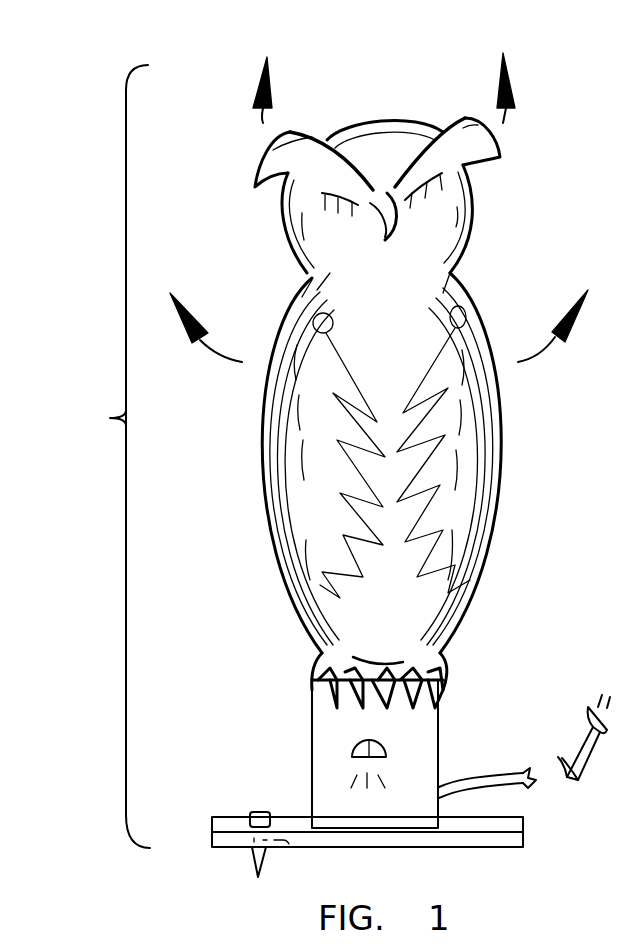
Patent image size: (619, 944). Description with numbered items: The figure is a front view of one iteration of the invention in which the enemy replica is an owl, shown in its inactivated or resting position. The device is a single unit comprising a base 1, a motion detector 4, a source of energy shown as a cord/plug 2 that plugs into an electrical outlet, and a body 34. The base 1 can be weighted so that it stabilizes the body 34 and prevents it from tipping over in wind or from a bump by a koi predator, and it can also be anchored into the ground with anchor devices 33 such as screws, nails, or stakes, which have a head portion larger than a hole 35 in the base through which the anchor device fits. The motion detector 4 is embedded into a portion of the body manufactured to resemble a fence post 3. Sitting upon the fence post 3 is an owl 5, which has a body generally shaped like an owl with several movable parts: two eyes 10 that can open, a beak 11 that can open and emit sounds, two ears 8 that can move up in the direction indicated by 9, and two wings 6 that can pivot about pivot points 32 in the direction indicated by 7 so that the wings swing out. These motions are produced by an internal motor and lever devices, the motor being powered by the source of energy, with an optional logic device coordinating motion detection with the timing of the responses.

The base 1 is at (460, 837).
The cord/plug 2 is at (477, 777).
The fence post 3 is at (318, 735).
The motion detector 4 is at (372, 738).
The owl 5 is at (432, 612).
The wings 6 is at (478, 483).
The direction of wing movement 7 is at (227, 355).
The ears 8 is at (488, 165).
The direction of ear movement 9 is at (262, 118).
The eyes 10 is at (412, 177).
The beak 11 is at (388, 227).
The pivot points 32 is at (460, 287).
The anchor devices 33 is at (252, 858).
The body 34 is at (113, 456).
The hole 35 is at (290, 852).